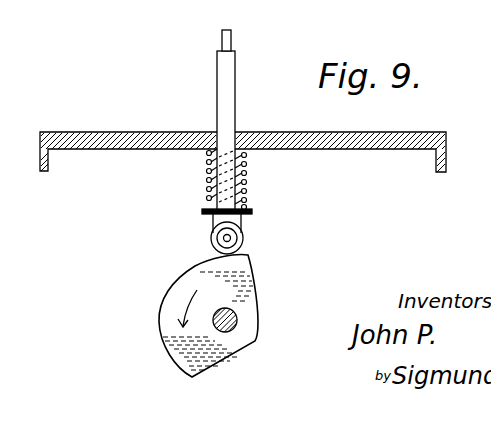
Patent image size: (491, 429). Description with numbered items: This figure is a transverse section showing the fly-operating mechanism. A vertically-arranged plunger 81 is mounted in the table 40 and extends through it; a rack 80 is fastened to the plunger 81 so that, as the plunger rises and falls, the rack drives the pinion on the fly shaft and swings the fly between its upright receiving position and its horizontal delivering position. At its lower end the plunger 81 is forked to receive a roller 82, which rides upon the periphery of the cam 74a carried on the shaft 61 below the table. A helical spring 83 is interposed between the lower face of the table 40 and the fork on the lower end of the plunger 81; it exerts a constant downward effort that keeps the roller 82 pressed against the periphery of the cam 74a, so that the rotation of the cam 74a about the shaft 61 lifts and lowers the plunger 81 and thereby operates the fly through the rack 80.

The table 40 is at (322, 130).
The rack 80 is at (228, 41).
The plunger 81 is at (228, 118).
The helical spring 83 is at (243, 176).
The roller 82 is at (244, 237).
The cam shaft 61 is at (238, 322).
The cam 74a is at (165, 344).